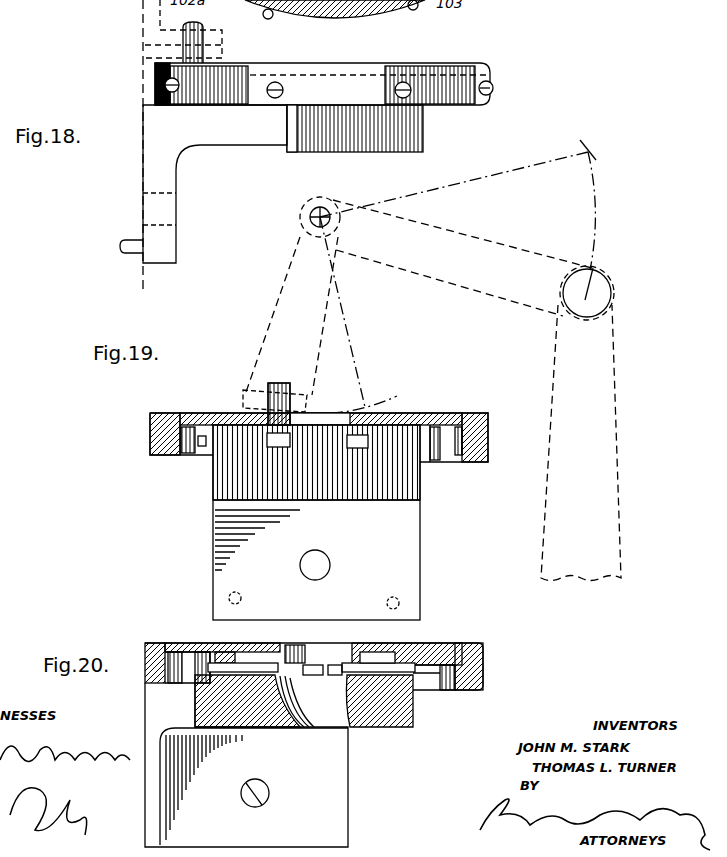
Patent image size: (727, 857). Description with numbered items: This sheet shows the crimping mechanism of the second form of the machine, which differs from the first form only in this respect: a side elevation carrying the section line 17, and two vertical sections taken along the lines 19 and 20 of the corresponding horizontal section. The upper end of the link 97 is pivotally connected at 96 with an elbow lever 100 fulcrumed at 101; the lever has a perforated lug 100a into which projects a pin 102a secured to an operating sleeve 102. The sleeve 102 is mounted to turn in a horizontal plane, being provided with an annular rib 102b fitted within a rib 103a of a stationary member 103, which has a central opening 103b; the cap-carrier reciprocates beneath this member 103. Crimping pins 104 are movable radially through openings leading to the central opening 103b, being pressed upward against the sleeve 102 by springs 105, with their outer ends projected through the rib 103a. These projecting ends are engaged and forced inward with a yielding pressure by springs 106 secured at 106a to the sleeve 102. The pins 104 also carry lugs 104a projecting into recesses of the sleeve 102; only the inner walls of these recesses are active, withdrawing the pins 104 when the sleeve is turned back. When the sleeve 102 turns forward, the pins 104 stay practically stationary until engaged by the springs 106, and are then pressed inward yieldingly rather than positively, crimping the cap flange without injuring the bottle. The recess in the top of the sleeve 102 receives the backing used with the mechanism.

In FIG. 18, the section line 17- 17 is at (136, 63).
In FIG. 18, the section line 19- 19 is at (325, 5).
In FIG. 18, the section line 20- 20 is at (264, 4).
In FIG. 18, the pivotal connection 96 is at (608, 293).
In FIG. 18, the link 97 is at (581, 443).
In FIG. 18, the elbow lever 100 is at (420, 277).
In FIG. 18, the perforated lug 100a is at (158, 40).
In FIG. 19, the perforated lug 100a is at (242, 390).
In FIG. 18, the fulcrum 101 is at (299, 219).
In FIG. 18, the operating sleeve 102 is at (443, 67).
In FIG. 19, the operating sleeve 102 is at (489, 440).
In FIG. 20, the operating sleeve 102 is at (488, 668).
In FIG. 18, the pin 102a is at (193, 42).
In FIG. 19, the pin 102a is at (281, 382).
In FIG. 20, the annular rib 102b is at (222, 646).
In FIG. 18, the stationary member 103 is at (423, 143).
In FIG. 19, the stationary member 103 is at (352, 502).
In FIG. 20, the stationary member 103 is at (415, 722).
In FIG. 20, the rib 103a is at (426, 660).
In FIG. 20, the central opening 103b is at (320, 735).
In FIG. 19, the crimping pins 104 is at (278, 450).
In FIG. 20, the crimping pins 104 is at (380, 662).
In FIG. 20, the lugs 104a is at (252, 662).
In FIG. 20, the springs 105 is at (240, 740).
In FIG. 19, the springs 106 is at (447, 452).
In FIG. 20, the springs 106 is at (168, 685).
In FIG. 19, the spring fastening 106a is at (186, 456).
In FIG. 20, the spring fastening 106a is at (470, 656).